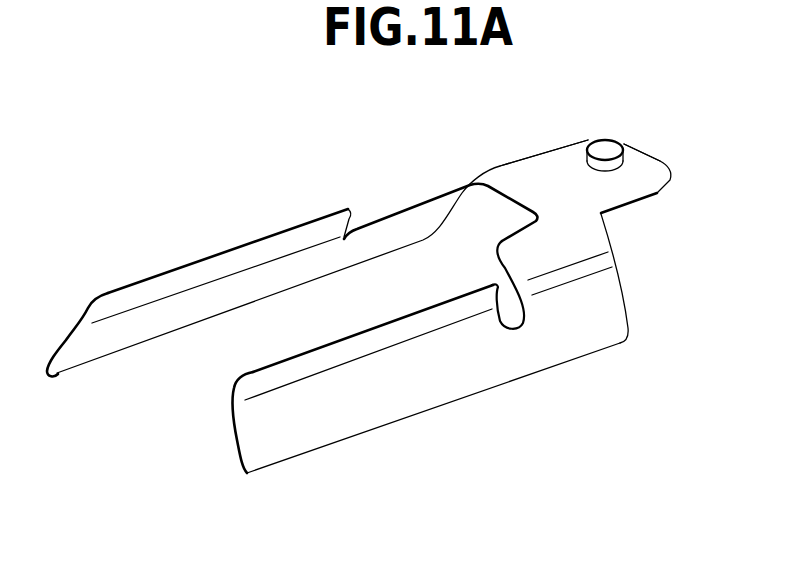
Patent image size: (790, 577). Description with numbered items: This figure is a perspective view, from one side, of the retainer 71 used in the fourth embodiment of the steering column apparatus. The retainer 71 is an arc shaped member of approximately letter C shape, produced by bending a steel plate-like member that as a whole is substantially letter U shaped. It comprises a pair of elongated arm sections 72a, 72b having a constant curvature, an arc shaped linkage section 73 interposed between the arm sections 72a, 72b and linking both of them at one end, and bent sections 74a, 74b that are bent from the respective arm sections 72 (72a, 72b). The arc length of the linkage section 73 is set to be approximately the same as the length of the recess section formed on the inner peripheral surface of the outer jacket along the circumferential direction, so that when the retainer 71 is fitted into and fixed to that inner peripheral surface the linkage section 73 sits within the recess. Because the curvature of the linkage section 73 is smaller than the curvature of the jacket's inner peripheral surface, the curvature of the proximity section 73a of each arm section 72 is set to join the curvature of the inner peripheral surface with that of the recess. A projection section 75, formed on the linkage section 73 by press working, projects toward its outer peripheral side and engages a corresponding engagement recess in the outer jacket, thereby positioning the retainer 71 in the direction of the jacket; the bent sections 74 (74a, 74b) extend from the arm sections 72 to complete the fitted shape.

The retainer 71 is at (608, 367).
The arm section 72 is at (170, 415).
The arm section 72a is at (277, 443).
The arm section 72b is at (85, 355).
The linkage section 73 is at (548, 167).
The proximity section 73a is at (397, 205).
The bent section 74 is at (281, 301).
The bent section 74a is at (283, 375).
The bent section 74b is at (135, 295).
The projection section 75 is at (607, 140).